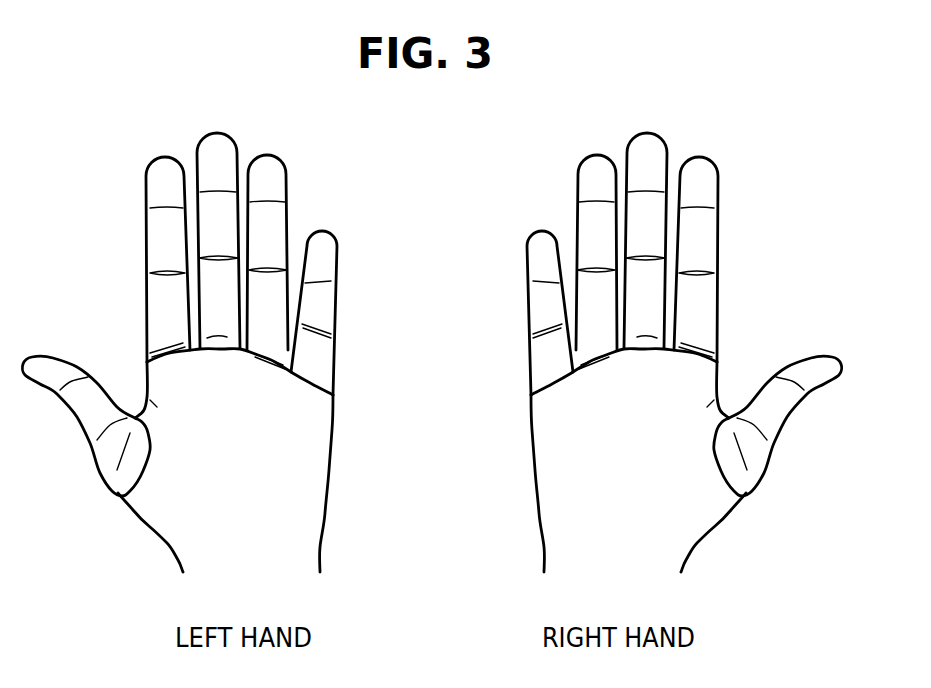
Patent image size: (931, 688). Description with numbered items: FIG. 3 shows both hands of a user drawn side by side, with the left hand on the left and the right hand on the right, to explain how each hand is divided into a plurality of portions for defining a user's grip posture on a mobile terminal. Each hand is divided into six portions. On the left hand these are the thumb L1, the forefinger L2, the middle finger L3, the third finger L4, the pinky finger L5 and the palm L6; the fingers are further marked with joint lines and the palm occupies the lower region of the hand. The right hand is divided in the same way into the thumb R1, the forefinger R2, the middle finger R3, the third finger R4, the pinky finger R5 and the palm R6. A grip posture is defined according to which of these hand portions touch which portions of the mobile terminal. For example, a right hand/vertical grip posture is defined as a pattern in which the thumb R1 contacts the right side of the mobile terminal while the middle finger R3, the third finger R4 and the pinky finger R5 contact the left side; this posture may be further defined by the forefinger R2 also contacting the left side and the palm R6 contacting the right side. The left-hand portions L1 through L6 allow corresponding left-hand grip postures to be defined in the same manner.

The thumb of the left hand L1 is at (86, 426).
The forefinger of the left hand L2 is at (168, 259).
The middle finger of the left hand L3 is at (218, 240).
The third finger of the left hand L4 is at (267, 252).
The pinky finger of the left hand L5 is at (314, 313).
The palm of the left hand L6 is at (225, 454).
The thumb of the right hand R1 is at (778, 426).
The forefinger of the right hand R2 is at (696, 259).
The middle finger of the right hand R3 is at (645, 240).
The third finger of the right hand R4 is at (596, 252).
The pinky finger of the right hand R5 is at (550, 313).
The palm of the right hand R6 is at (638, 454).